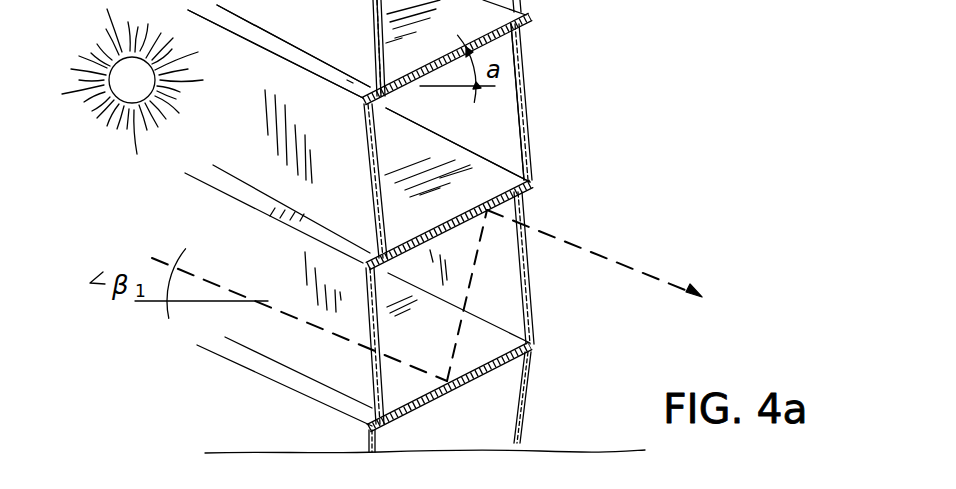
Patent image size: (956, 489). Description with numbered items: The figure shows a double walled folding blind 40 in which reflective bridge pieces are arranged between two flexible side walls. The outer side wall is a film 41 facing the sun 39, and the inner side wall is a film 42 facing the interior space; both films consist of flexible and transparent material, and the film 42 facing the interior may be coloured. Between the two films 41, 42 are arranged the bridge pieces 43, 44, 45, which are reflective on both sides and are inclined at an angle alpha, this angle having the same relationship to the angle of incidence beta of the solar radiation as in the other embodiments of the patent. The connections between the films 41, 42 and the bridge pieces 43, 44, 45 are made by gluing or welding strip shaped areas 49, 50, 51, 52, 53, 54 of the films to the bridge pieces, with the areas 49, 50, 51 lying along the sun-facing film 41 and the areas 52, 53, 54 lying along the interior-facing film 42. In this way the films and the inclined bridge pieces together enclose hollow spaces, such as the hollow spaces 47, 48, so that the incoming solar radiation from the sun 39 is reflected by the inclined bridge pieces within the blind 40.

The sun 39 is at (107, 24).
The double walled folding blind 40 is at (597, 63).
The film facing the sun 41 is at (374, 7).
The film facing the interior space 42 is at (530, 110).
The bridge piece 43 is at (488, 31).
The bridge piece 44 is at (445, 222).
The bridge piece 45 is at (503, 352).
The hollow space 47 is at (500, 144).
The hollow space 48 is at (493, 278).
The strip shaped area 49 is at (335, 88).
The strip shaped area 50 is at (350, 243).
The strip shaped area 51 is at (347, 403).
The strip shaped area 52 is at (533, 27).
The strip shaped area 53 is at (532, 198).
The strip shaped area 54 is at (524, 356).